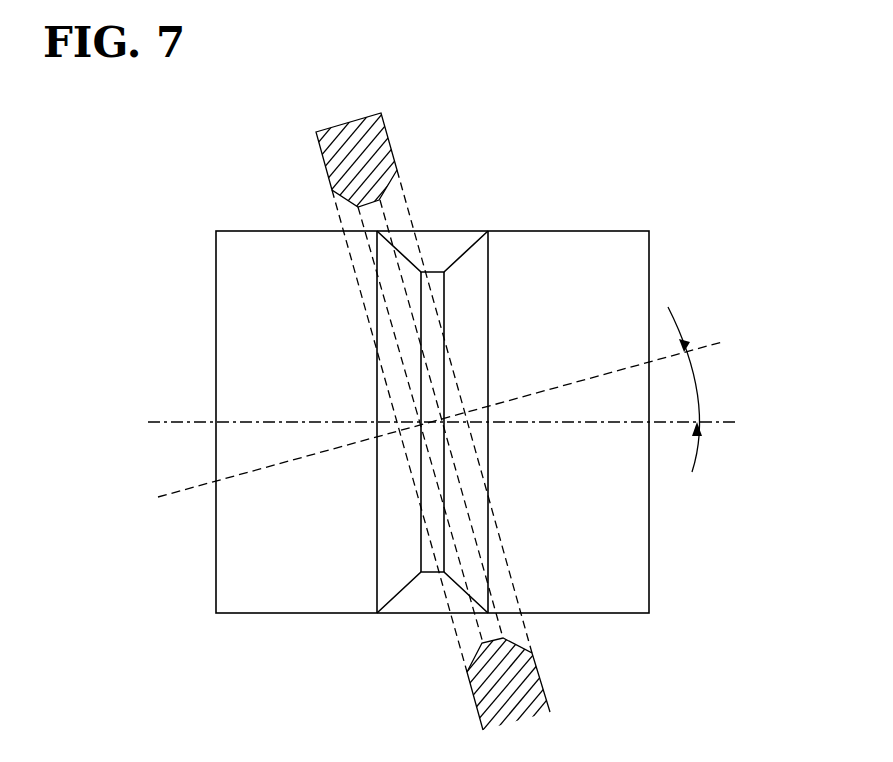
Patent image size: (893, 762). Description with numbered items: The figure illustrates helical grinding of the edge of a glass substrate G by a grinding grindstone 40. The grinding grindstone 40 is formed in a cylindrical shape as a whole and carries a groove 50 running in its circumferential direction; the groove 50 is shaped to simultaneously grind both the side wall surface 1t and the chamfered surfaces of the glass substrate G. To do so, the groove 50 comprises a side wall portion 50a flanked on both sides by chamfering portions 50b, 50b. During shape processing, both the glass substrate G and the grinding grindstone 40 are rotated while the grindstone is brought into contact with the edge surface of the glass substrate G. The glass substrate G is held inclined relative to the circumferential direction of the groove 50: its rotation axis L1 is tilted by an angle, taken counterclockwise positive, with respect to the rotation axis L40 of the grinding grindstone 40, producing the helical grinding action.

The grinding grindstone 40 is at (221, 198).
The glass substrate G is at (314, 157).
The side wall surface 1t is at (380, 214).
The rotation axis of the glass substrate L1 is at (469, 408).
The rotation axis of the grindstone L40 is at (467, 426).
The groove 50 is at (750, 691).
The side wall portion 50a is at (432, 500).
The chamfering portions 50b is at (398, 505).